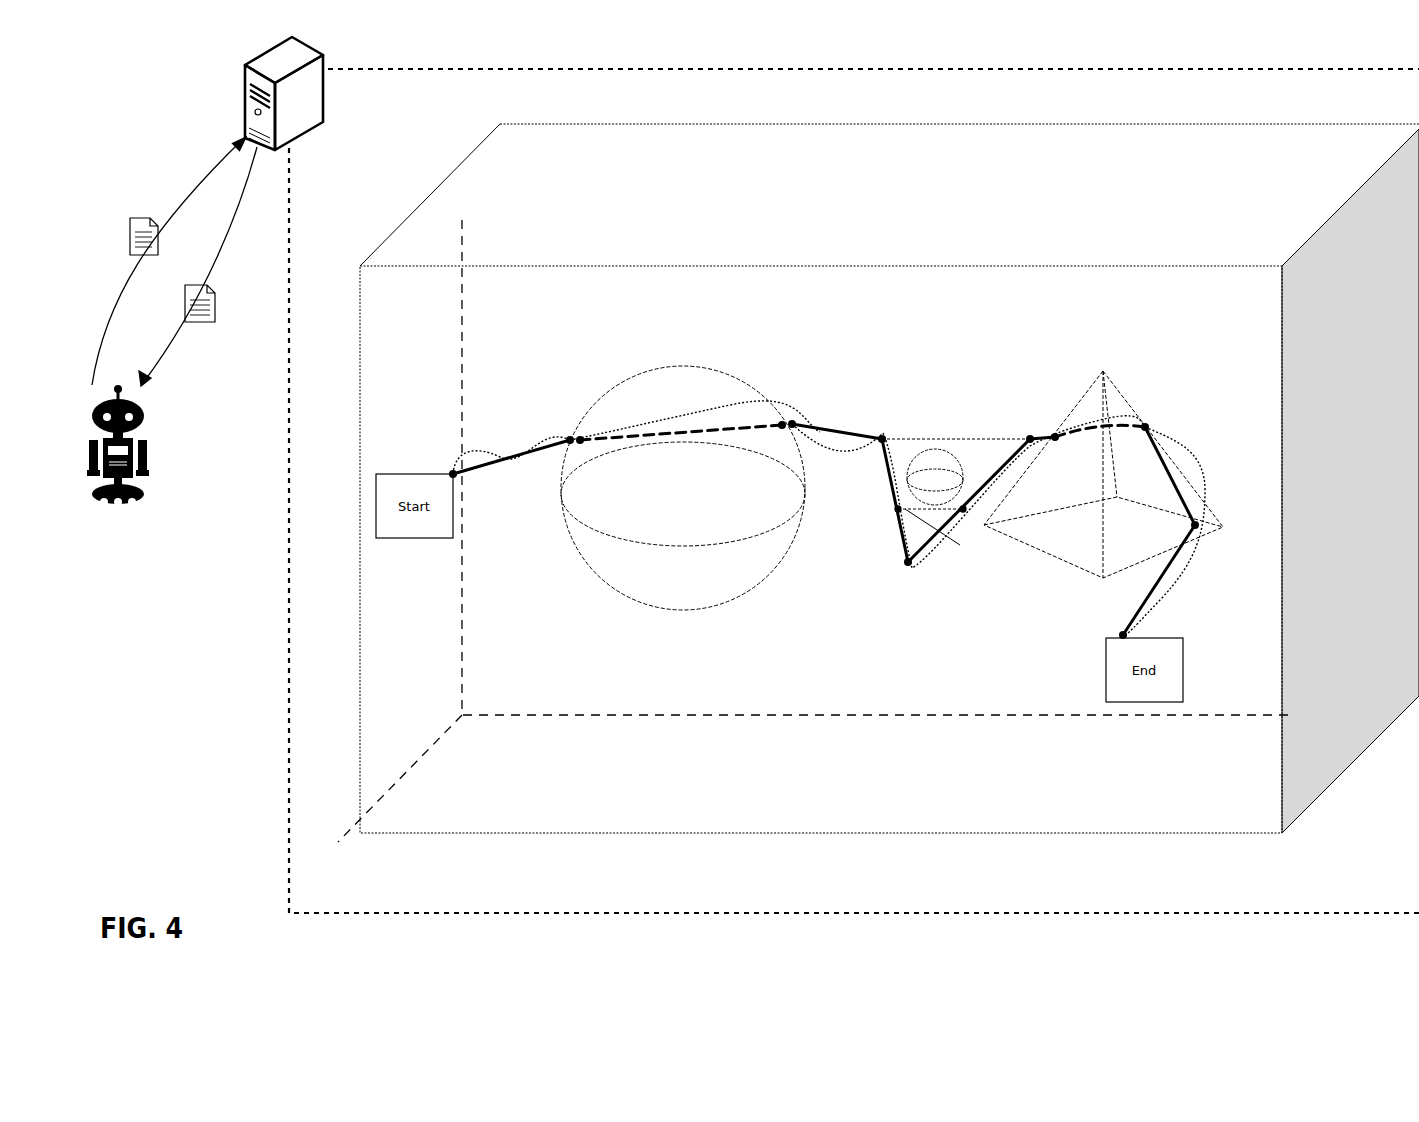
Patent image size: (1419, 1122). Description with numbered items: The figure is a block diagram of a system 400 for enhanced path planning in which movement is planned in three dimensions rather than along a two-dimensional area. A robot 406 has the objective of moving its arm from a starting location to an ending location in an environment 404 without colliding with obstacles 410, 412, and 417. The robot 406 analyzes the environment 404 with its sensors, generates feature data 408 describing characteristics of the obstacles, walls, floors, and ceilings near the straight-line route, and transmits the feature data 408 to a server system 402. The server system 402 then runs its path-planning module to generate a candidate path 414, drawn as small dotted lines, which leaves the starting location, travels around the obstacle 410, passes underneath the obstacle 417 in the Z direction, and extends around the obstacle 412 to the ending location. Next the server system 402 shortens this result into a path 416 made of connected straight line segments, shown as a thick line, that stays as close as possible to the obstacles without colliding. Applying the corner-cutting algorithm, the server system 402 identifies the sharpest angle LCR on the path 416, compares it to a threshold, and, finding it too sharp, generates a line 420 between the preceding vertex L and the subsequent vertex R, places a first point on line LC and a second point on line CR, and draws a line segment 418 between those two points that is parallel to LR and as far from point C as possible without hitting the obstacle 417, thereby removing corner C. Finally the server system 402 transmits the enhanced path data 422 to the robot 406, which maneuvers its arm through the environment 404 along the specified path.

The system 400 is at (166, 722).
The server system 402 is at (245, 85).
The environment 404 is at (406, 220).
The robot 406 is at (147, 471).
The feature data 408 is at (135, 230).
The obstacle 410 is at (718, 374).
The obstacle 412 is at (1114, 386).
The path 414 is at (478, 452).
The path 416 is at (550, 470).
The obstacle 417 is at (906, 461).
The line segment 418 is at (946, 543).
The line 420 is at (944, 440).
The enhanced path data 422 is at (210, 312).